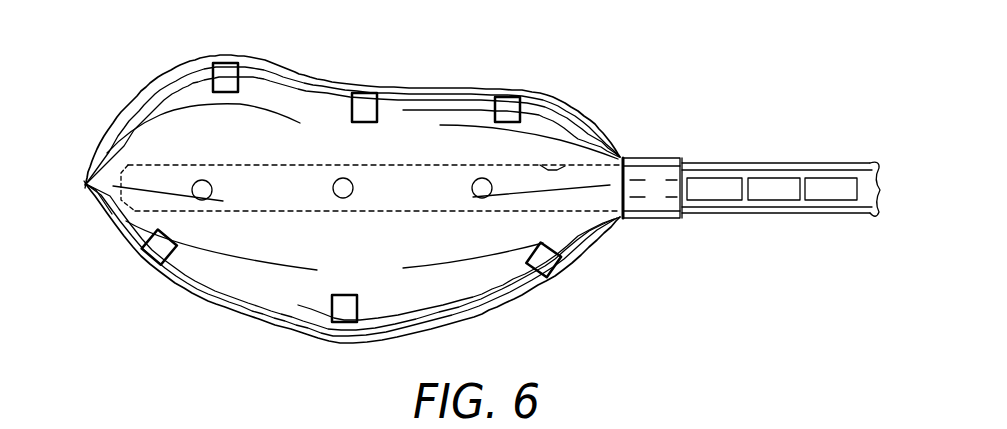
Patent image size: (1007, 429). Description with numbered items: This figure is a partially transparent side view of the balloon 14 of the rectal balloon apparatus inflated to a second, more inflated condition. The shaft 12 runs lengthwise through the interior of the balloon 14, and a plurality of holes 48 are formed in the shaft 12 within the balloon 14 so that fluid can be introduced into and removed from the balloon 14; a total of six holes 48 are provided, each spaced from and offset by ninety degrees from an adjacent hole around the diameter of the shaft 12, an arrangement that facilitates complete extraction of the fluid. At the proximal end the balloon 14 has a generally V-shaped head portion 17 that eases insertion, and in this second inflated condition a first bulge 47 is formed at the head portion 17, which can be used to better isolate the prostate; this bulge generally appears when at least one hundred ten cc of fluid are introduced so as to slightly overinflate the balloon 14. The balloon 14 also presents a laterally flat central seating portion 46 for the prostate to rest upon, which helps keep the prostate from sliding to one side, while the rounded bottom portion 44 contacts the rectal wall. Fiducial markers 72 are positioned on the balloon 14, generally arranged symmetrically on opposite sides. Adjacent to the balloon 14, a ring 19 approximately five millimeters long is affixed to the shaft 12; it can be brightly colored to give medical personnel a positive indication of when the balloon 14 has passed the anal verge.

The shaft 12 is at (355, 164).
The balloon 14 is at (530, 92).
The head portion 17 is at (93, 158).
The ring 19 is at (650, 160).
The bottom portion 44 is at (195, 300).
The central seating portion 46 is at (358, 92).
The first bulge 47 is at (178, 63).
The holes 48 is at (335, 206).
The fiducial markers 72 is at (505, 96).